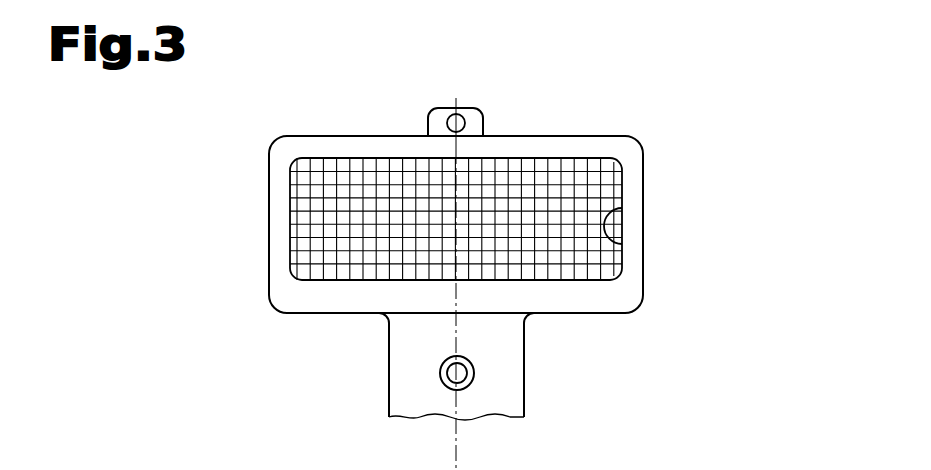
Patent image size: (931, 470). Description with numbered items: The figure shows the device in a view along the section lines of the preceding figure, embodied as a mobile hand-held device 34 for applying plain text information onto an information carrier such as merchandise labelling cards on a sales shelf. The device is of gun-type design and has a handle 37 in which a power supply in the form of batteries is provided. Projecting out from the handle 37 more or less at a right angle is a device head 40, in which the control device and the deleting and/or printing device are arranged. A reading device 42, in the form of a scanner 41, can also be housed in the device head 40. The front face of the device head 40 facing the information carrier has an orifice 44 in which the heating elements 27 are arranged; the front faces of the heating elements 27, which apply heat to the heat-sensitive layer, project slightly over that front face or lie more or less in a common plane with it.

The heating elements 27 is at (597, 170).
The mobile hand-held device 34 is at (657, 198).
The handle 37 is at (420, 375).
The device head 40 is at (330, 298).
The scanner 41 is at (460, 120).
The reading device 42 is at (492, 110).
The orifice 44 is at (622, 247).